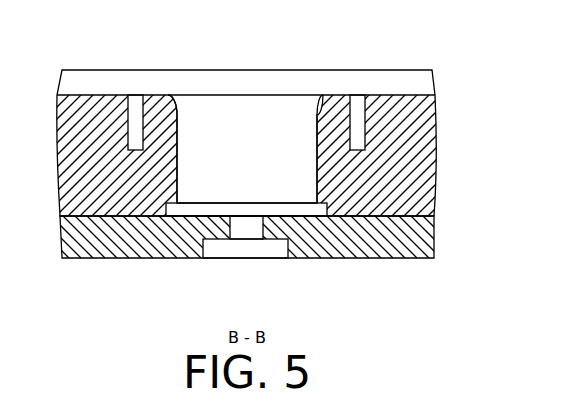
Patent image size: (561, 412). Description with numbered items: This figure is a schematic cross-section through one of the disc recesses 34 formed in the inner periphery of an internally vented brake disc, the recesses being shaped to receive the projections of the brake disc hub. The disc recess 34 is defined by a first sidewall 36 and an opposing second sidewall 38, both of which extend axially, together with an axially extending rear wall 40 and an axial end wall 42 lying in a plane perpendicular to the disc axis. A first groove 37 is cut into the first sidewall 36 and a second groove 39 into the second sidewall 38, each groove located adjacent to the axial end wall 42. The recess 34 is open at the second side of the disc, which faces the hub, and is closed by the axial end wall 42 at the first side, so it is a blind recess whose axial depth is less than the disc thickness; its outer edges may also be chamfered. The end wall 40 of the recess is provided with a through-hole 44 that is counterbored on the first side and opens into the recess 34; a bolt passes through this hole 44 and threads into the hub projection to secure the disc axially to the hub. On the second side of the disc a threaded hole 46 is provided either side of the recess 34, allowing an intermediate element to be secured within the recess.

The disc recess 34 is at (253, 112).
The first sidewall 36 is at (183, 124).
The first groove 37 is at (193, 211).
The second sidewall 38 is at (308, 128).
The second groove 39 is at (322, 212).
The rear wall 40 is at (293, 145).
The axial end wall 42 is at (200, 241).
The through-hole 44 is at (250, 230).
The threaded hole 46 is at (136, 101).